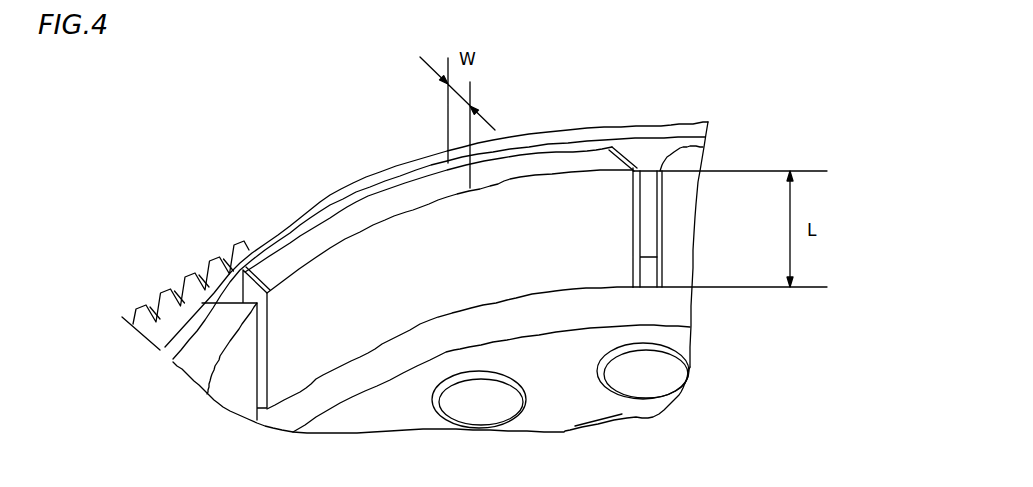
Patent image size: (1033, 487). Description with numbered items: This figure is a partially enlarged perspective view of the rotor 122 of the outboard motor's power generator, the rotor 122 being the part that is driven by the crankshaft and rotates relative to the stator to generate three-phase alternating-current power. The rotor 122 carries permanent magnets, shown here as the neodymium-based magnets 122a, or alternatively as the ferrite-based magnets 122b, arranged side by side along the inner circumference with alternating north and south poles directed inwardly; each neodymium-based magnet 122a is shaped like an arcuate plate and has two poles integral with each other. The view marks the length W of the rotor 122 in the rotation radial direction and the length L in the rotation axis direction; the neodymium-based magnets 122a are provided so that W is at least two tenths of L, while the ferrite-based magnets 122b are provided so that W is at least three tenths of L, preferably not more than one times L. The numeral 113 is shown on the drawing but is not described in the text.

The rotor 122 is at (627, 73).
The rotor 113 is at (445, 239).
The neodymium-based magnets 122a is at (215, 332).
The ferrite-based magnets 122b is at (439, 240).